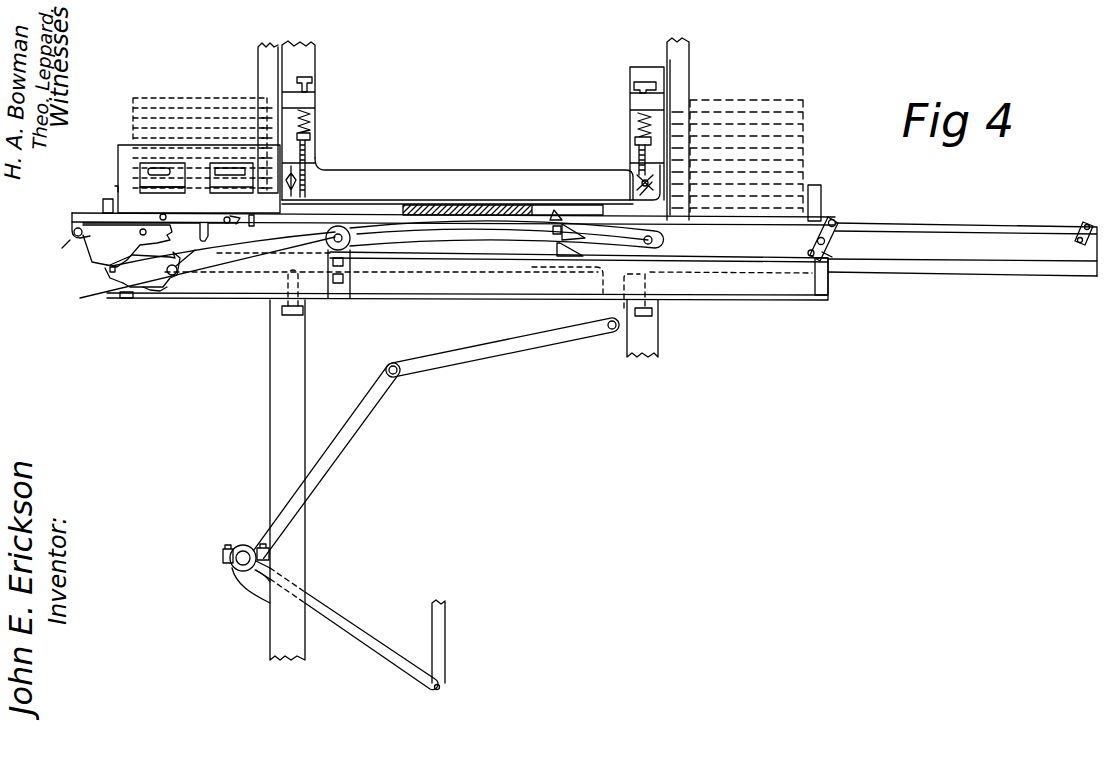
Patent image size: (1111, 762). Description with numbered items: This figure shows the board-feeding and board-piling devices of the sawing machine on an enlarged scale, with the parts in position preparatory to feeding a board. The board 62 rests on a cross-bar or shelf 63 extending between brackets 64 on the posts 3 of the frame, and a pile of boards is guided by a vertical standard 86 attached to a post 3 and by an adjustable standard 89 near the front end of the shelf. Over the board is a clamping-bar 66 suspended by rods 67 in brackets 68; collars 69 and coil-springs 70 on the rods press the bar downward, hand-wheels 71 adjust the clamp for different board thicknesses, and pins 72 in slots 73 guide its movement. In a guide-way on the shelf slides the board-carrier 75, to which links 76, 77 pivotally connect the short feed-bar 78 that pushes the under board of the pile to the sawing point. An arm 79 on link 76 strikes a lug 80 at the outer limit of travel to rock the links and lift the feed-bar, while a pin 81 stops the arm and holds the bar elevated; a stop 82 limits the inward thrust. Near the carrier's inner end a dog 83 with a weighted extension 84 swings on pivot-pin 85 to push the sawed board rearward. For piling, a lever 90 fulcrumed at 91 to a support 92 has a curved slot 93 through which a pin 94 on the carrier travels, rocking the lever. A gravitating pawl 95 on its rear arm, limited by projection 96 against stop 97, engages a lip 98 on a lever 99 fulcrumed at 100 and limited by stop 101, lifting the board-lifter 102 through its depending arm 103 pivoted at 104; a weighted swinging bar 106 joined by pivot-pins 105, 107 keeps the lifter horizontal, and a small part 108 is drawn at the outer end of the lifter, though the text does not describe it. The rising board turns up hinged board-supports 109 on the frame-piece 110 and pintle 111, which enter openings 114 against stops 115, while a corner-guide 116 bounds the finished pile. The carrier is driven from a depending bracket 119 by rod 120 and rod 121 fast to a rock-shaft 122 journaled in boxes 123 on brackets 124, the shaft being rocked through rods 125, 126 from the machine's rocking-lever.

The post 3 is at (645, 360).
The board 62 is at (198, 98).
The cross-bar or shelf 63 is at (353, 213).
The bracket 64 is at (660, 303).
The clamping-bar 66 is at (396, 170).
The rod 67 is at (310, 92).
The bracket 68 is at (631, 103).
The collar 69 is at (312, 135).
The coil-spring 70 is at (638, 118).
The hand-wheel 71 is at (643, 81).
The pin 72 is at (640, 188).
The slot 73 is at (640, 198).
The sliding bar (board-carrier) 75 is at (1028, 277).
The link 76 is at (838, 225).
The link 77 is at (1085, 225).
The feed-bar 78 is at (985, 224).
The arm 79 is at (822, 262).
The lug 80 is at (828, 256).
The pin 81 is at (808, 256).
The stop 82 is at (250, 227).
The dog 83 is at (553, 212).
The weighted lower extension 84 is at (565, 252).
The pivot-pin 85 is at (553, 233).
The vertical standard or guide 86 is at (690, 65).
The adjustable standard 89 is at (822, 190).
The lever 90 is at (408, 264).
The fulcrum 91 is at (352, 250).
The support 92 is at (330, 272).
The curved slot 93 is at (433, 238).
The pin 94 is at (663, 240).
The gravitating pawl 95 is at (118, 292).
The rearward projection 96 is at (158, 292).
The stop 97 is at (125, 299).
The lip 98 is at (110, 266).
The lever 99 is at (90, 254).
The fulcrum 100 is at (140, 234).
The stop 101 is at (108, 290).
The horizontal bar (board-lifter) 102 is at (72, 214).
The depending arm 103 is at (74, 235).
The pivot 104 is at (62, 252).
The pivot-pin 105 is at (164, 214).
The weighted swinging bar 106 is at (208, 234).
The pivot-pin 107 is at (220, 225).
The stop 108 is at (103, 205).
The board-support 109 is at (140, 158).
The frame-piece 110 is at (213, 150).
The pintle 111 is at (116, 188).
The opening 114 is at (143, 186).
The stop 115 is at (160, 170).
The adjustable corner-guide 116 is at (278, 48).
The depending bracket 119 is at (603, 309).
The rod 120 is at (505, 352).
The rod 121 is at (345, 448).
The rock-shaft 122 is at (232, 561).
The box 123 is at (226, 548).
The bracket 124 is at (245, 586).
The rod 125 is at (383, 678).
The rod 126 is at (447, 640).